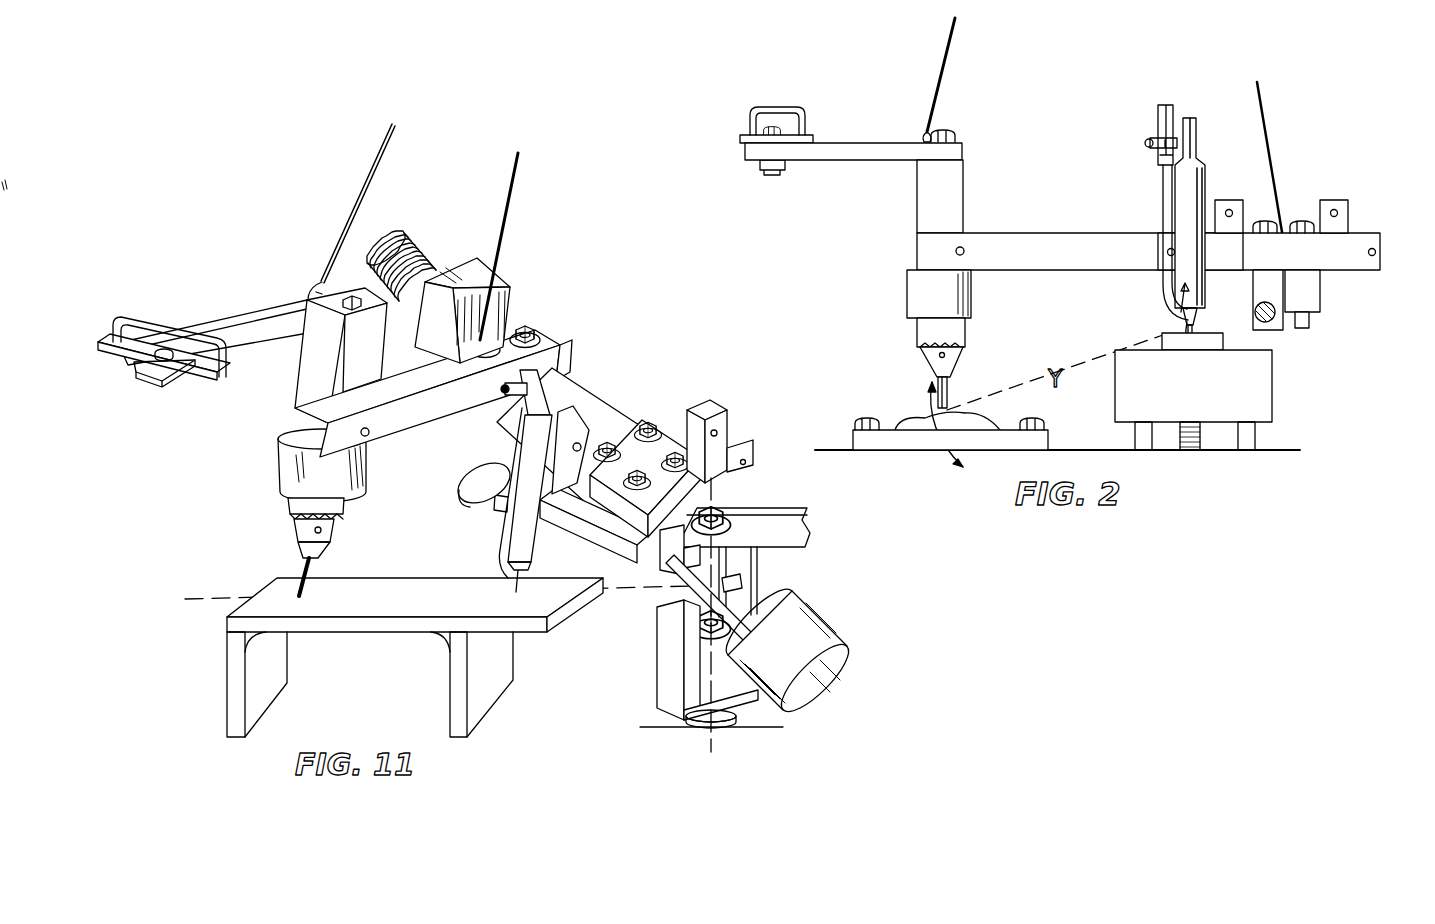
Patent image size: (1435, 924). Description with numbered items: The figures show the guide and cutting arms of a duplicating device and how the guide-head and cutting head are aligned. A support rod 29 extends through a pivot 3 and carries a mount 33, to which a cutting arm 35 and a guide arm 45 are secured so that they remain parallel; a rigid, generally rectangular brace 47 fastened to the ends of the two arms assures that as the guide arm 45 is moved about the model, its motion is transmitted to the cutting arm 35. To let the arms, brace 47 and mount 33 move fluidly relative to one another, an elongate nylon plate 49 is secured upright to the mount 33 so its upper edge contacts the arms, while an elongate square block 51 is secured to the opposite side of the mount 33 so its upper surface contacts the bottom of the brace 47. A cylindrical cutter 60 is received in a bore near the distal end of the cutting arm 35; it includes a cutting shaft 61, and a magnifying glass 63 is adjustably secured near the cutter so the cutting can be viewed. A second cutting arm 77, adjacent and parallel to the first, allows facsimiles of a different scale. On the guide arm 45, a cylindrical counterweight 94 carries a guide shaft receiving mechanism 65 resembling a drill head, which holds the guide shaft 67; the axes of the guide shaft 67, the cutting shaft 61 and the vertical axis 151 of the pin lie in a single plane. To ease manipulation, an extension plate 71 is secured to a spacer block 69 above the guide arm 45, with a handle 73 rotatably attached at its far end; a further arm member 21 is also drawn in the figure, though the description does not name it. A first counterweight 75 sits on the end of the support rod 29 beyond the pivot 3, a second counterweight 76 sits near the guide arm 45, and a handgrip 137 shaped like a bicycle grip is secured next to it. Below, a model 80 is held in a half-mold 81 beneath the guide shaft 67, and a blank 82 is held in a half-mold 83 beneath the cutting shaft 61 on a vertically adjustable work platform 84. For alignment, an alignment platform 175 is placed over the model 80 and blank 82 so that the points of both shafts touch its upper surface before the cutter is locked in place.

In FIG. 11, the pivot 3 is at (652, 678).
In FIG. 11, the support arm 21 is at (240, 326).
In FIG. 2, the support rod 29 is at (1274, 333).
In FIG. 11, the mount 33 is at (742, 580).
In FIG. 2, the mount 33 is at (1266, 336).
In FIG. 11, the cutting arm 35 is at (650, 428).
In FIG. 2, the cutting arm 35 is at (1223, 267).
In FIG. 11, the guide arm 45 is at (293, 415).
In FIG. 2, the guide arm 45 is at (1082, 233).
In FIG. 11, the brace 47 is at (590, 400).
In FIG. 2, the brace 47 is at (1320, 300).
In FIG. 11, the nylon plate 49 is at (612, 527).
In FIG. 2, the nylon plate 49 is at (1238, 330).
In FIG. 2, the block 51 is at (1308, 322).
In FIG. 2, the cutter 60 is at (1205, 171).
In FIG. 2, the cutting shaft 61 is at (1196, 322).
In FIG. 11, the magnifying glass 63 is at (460, 492).
In FIG. 11, the guide shaft receiving mechanism 65 is at (338, 528).
In FIG. 2, the guide shaft receiving mechanism 65 is at (966, 340).
In FIG. 11, the guide shaft 67 is at (302, 372).
In FIG. 2, the guide shaft 67 is at (950, 383).
In FIG. 2, the spacer block 69 is at (964, 190).
In FIG. 2, the extension plate 71 is at (856, 143).
In FIG. 11, the handle 73 is at (150, 320).
In FIG. 2, the handle 73 is at (800, 108).
In FIG. 11, the first counterweight 75 is at (830, 633).
In FIG. 11, the second counterweight 76 is at (508, 302).
In FIG. 11, the second cutting arm 77 is at (745, 446).
In FIG. 2, the second cutting arm 77 is at (1380, 246).
In FIG. 2, the model 80 is at (1000, 424).
In FIG. 2, the half-mold 81 is at (853, 432).
In FIG. 2, the blank 82 is at (1162, 338).
In FIG. 2, the half-mold 83 is at (1232, 200).
In FIG. 2, the work platform 84 is at (1273, 403).
In FIG. 11, the counterweight 94 is at (368, 477).
In FIG. 2, the counterweight 94 is at (973, 296).
In FIG. 11, the handgrip 137 is at (410, 246).
In FIG. 11, the vertical axis 151 is at (708, 742).
In FIG. 11, the alignment platform 175 is at (227, 668).